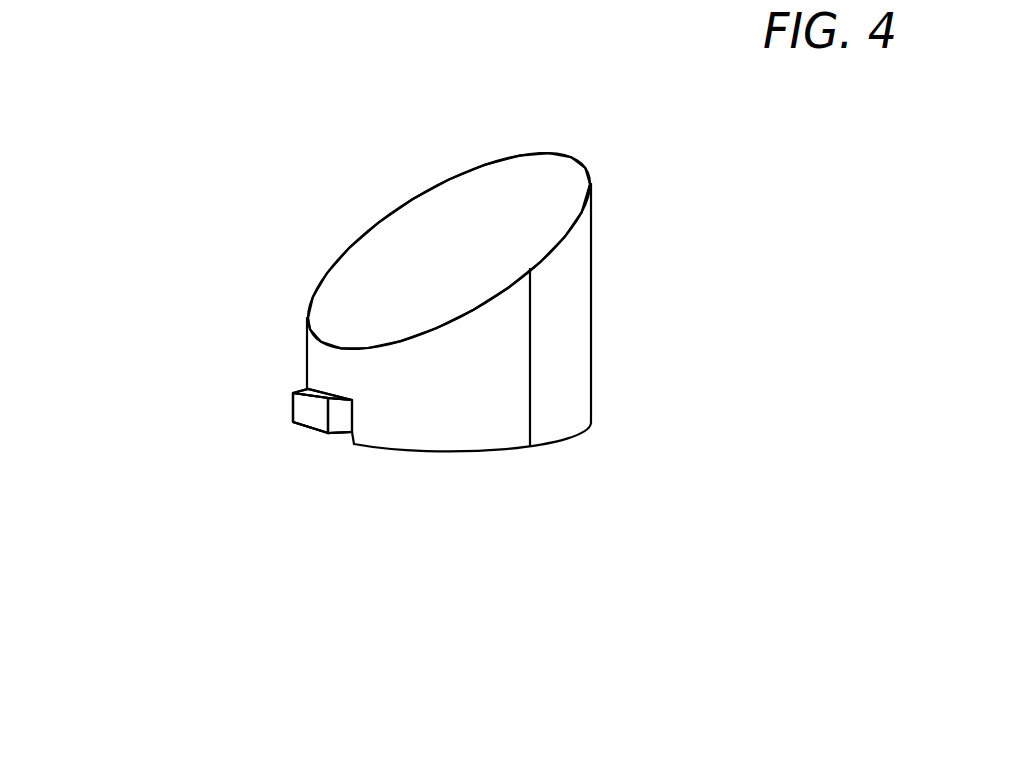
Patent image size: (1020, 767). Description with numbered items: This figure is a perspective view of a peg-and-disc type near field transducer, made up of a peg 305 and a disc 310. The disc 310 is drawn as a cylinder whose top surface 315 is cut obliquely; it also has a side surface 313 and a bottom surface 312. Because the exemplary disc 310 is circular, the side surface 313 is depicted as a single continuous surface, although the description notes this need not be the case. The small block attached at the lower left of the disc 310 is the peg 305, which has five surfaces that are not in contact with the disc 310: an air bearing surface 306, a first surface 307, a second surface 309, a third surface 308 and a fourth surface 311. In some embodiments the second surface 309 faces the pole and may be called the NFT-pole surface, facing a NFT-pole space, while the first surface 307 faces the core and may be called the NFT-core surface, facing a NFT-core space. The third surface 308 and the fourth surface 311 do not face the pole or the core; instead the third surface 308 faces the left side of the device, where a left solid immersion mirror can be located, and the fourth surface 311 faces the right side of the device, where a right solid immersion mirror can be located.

The peg 305 is at (312, 442).
The air bearing surface 306 is at (298, 421).
The first surface 307 is at (340, 432).
The third surface 308 is at (334, 447).
The second surface 309 is at (338, 397).
The disc 310 is at (424, 237).
The fourth surface 311 is at (284, 385).
The bottom surface 312 is at (544, 466).
The side surface 313 is at (518, 362).
The top surface 315 is at (486, 240).